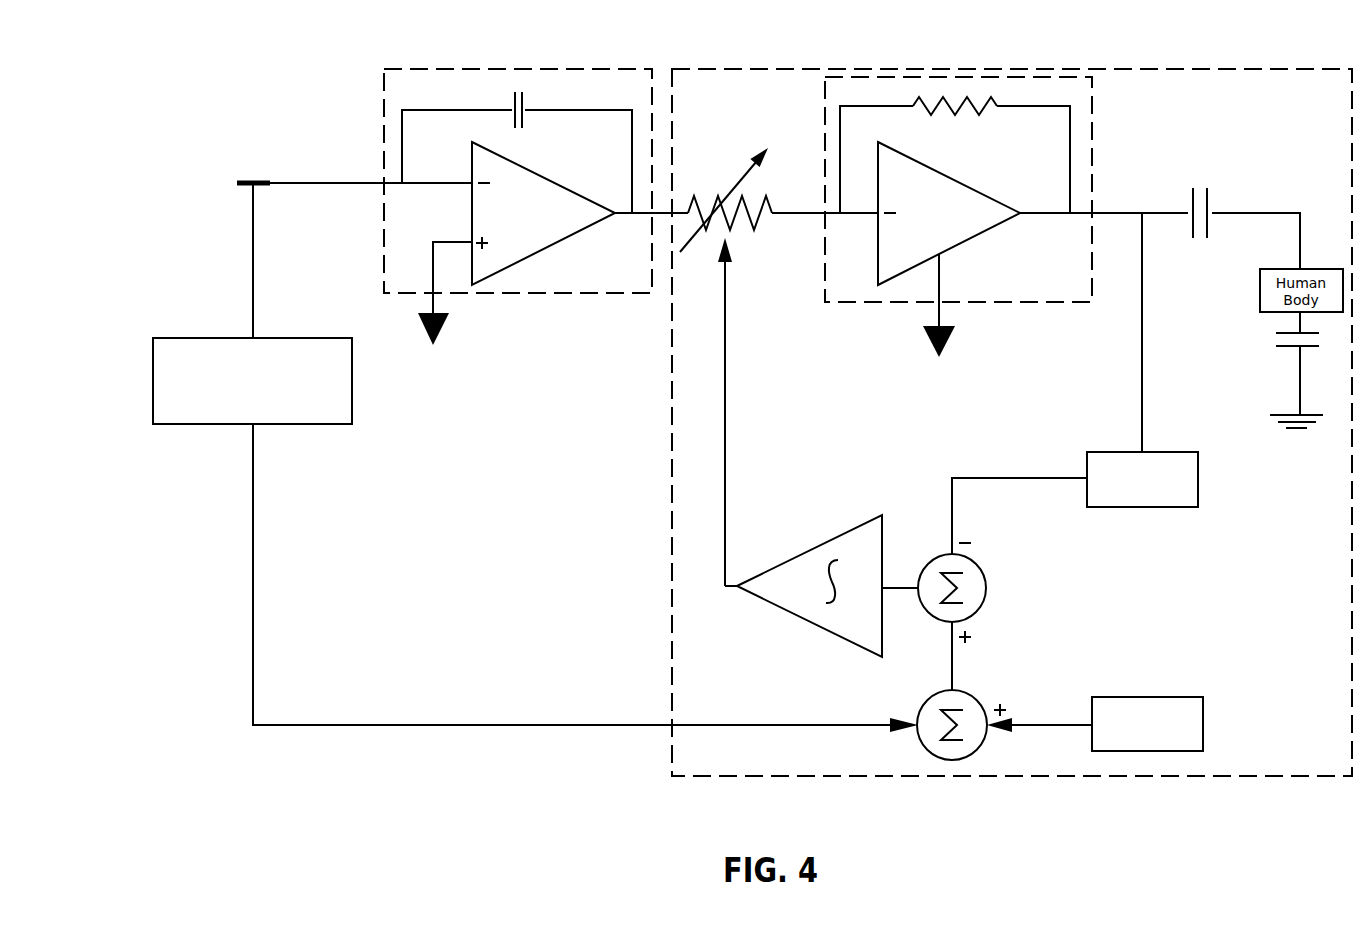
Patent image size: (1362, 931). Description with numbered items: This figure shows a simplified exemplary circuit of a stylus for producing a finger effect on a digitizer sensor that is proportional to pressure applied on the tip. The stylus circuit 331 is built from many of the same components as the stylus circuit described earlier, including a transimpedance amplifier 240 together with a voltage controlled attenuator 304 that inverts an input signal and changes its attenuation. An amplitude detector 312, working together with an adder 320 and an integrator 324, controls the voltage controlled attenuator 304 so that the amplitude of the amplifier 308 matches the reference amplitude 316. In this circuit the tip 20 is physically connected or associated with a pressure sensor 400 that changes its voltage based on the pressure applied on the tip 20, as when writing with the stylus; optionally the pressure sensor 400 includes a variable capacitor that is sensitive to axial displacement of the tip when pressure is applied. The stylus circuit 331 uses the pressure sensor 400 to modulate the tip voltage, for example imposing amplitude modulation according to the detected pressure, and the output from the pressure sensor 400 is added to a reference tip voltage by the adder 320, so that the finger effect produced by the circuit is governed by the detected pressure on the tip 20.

The tip 20 is at (247, 182).
The pressure sensor 400 is at (283, 338).
The transimpedance amplifier 240 is at (652, 95).
The voltage controlled attenuator 304 is at (750, 200).
The amplifier 308 is at (1092, 95).
The stylus circuit 331 is at (1235, 69).
The amplitude detector 312 is at (1198, 480).
The adder 320 is at (970, 560).
The integrator 324 is at (818, 545).
The reference amplitude 316 is at (1203, 728).